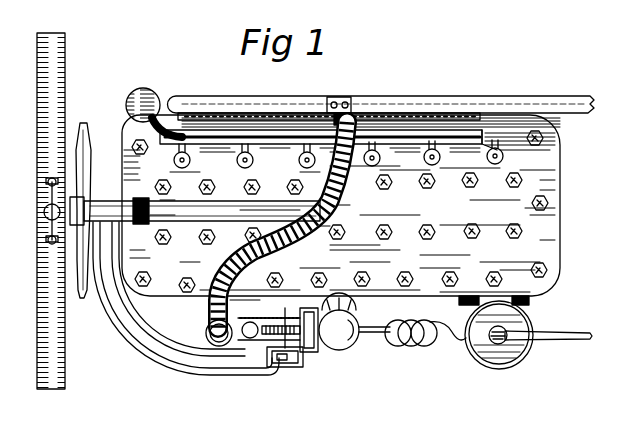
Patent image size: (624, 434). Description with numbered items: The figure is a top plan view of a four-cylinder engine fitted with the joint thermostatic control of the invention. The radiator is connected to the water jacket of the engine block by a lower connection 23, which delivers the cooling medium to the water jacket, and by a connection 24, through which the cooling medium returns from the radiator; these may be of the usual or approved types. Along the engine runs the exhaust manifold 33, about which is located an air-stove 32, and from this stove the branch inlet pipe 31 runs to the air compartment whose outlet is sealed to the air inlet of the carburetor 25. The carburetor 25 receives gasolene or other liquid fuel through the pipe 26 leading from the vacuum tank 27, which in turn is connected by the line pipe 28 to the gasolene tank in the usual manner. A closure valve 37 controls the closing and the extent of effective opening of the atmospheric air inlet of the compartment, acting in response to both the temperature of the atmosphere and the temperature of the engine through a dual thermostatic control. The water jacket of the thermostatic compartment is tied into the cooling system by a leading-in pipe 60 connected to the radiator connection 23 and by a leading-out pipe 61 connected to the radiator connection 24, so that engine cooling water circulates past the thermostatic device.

The lower connection 23 is at (96, 282).
The connection 24 is at (110, 174).
The carburetor 25 is at (349, 350).
The pipe 26 is at (376, 345).
The vacuum tank 27 is at (484, 362).
The line pipe 28 is at (552, 345).
The branch inlet pipe 31 is at (356, 150).
The air-stove 32 is at (338, 97).
The exhaust manifold 33 is at (278, 105).
The closure valve 37 is at (250, 332).
The leading-in pipe 60 is at (148, 300).
The leading-out pipe 61 is at (176, 373).